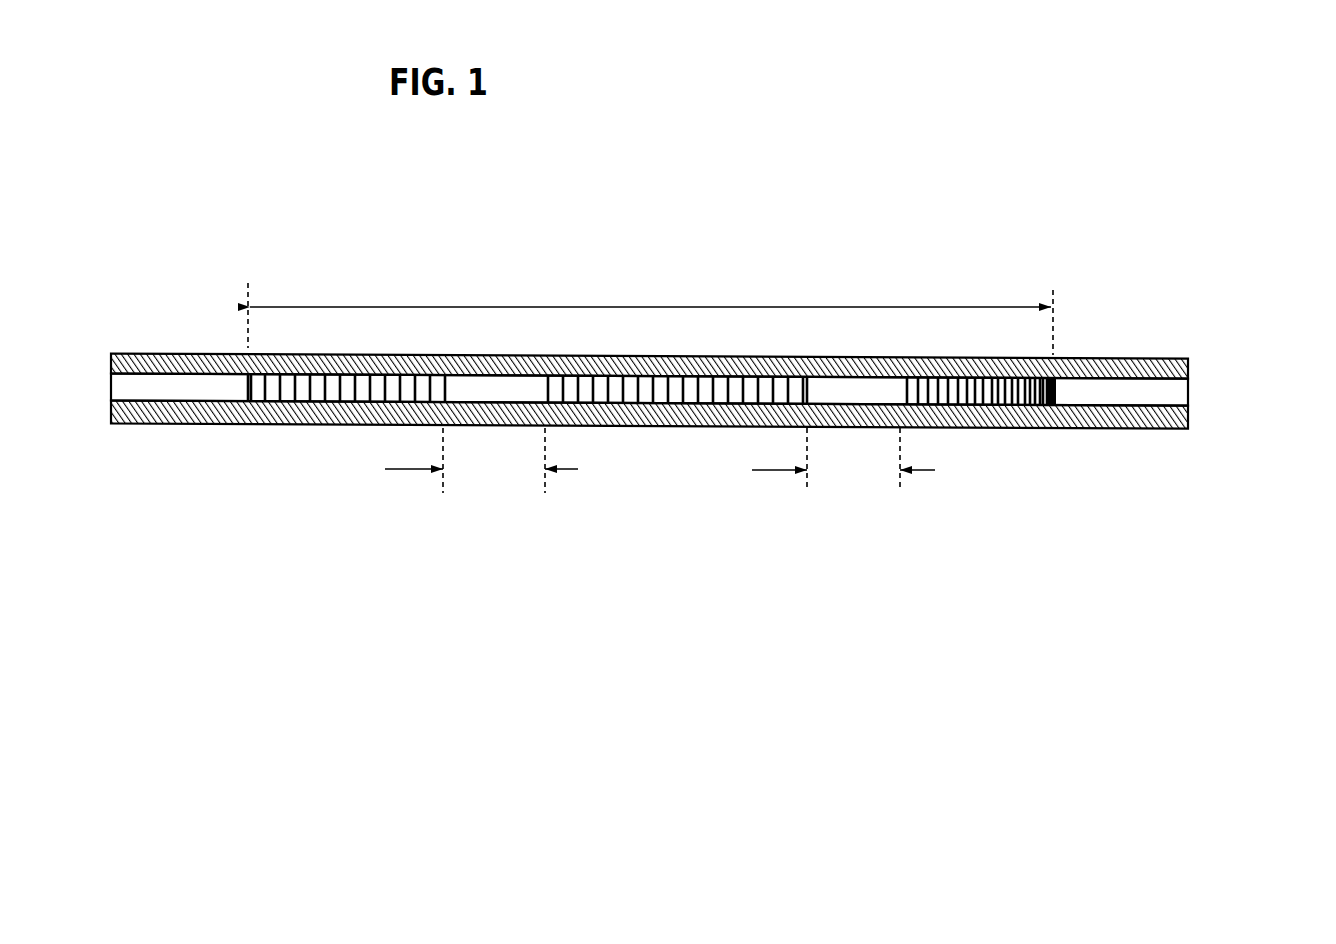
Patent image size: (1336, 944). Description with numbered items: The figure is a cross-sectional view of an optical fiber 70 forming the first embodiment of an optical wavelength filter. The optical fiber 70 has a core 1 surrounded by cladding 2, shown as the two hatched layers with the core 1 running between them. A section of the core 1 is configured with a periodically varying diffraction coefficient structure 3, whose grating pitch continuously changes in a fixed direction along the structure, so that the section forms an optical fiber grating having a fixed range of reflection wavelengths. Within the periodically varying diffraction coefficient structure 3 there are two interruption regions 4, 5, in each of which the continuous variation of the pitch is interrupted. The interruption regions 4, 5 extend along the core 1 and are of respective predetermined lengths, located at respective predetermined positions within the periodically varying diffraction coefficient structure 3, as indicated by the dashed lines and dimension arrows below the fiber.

The core 1 is at (1140, 392).
The cladding 2 is at (1025, 428).
The periodically varying diffraction coefficient structure 3 is at (623, 302).
The interruption region 4 is at (497, 470).
The interruption region 5 is at (837, 480).
The optical fiber 70 is at (1168, 350).